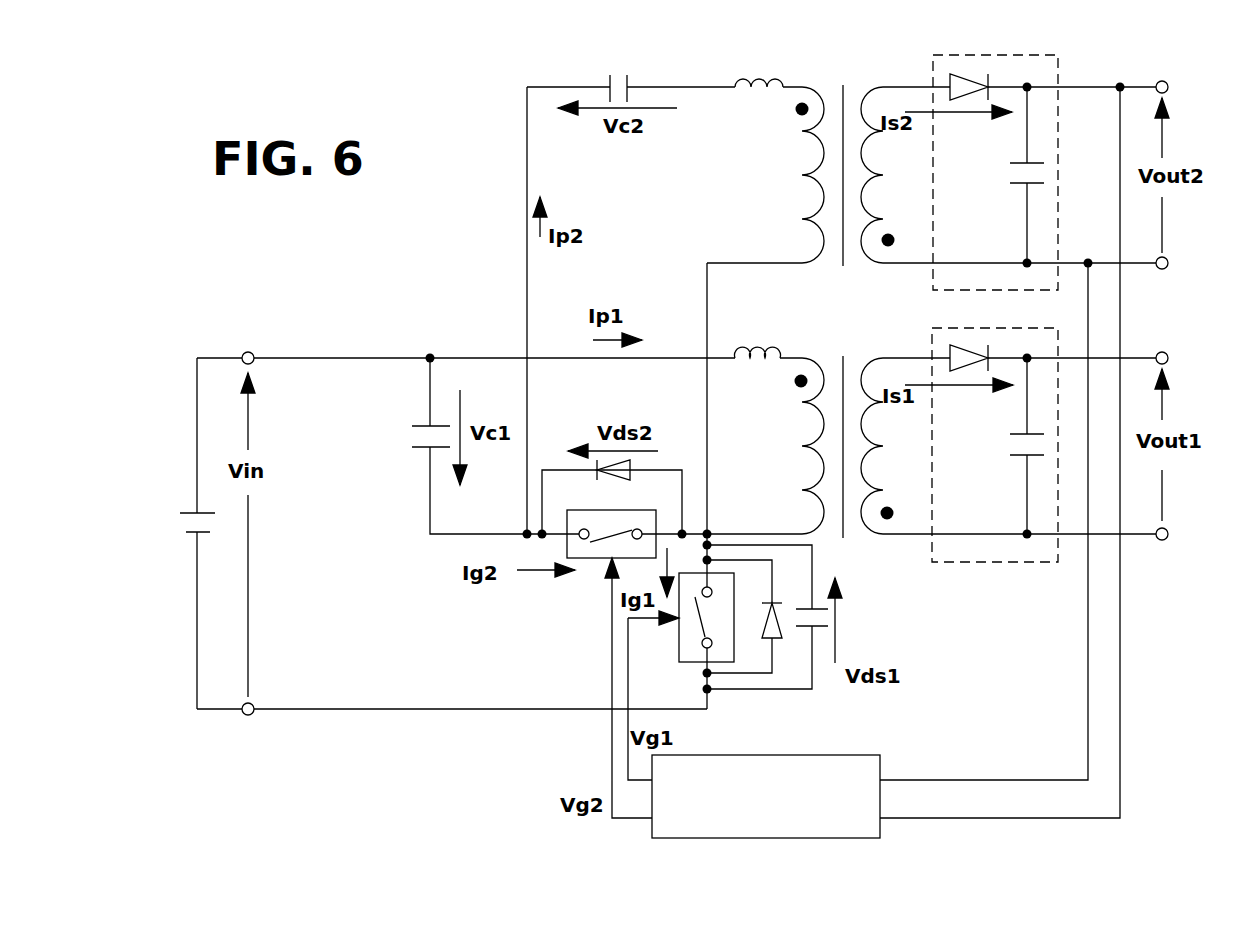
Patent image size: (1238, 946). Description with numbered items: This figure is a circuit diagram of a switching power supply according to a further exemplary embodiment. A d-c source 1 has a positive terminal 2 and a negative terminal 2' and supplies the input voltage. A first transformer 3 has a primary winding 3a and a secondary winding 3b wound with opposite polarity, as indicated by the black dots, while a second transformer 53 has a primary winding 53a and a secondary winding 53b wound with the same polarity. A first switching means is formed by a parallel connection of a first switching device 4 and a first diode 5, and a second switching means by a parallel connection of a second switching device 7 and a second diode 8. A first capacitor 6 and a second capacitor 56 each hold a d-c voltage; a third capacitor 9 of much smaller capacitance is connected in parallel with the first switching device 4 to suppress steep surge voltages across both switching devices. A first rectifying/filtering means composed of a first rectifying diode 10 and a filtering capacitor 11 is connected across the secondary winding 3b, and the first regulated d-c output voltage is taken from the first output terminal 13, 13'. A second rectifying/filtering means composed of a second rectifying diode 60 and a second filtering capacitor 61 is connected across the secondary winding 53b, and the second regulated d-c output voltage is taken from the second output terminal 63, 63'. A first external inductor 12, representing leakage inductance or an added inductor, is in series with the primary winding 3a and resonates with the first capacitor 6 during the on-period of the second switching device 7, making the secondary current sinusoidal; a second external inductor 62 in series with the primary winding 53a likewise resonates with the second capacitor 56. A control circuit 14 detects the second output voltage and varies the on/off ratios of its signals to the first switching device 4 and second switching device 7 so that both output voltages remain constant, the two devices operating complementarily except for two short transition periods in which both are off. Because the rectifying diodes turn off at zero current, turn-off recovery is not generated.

The d-c source 1 is at (182, 516).
The positive terminal 2 is at (255, 335).
The negative terminal 2' is at (258, 738).
The first transformer 3 is at (842, 465).
The primary winding 3a is at (807, 470).
The secondary winding 3b is at (888, 470).
The first switching device 4 is at (679, 640).
The first diode 5 is at (777, 640).
The first capacitor 6 is at (412, 432).
The second switching device 7 is at (590, 560).
The second diode 8 is at (632, 463).
The third capacitor 9 is at (827, 615).
The first rectifying diode 10 is at (985, 364).
The filtering capacitor 11 is at (1010, 442).
The first external inductor 12 is at (775, 346).
The first output terminal 13 is at (1162, 336).
The first output terminal 13' is at (1167, 566).
The control circuit 14 is at (870, 838).
The second transformer 53 is at (812, 148).
The primary winding 53a is at (807, 165).
The secondary winding 53b is at (873, 107).
The second capacitor 56 is at (618, 74).
The second rectifying diode 60 is at (990, 96).
The second filtering capacitor 61 is at (1010, 173).
The second external inductor 62 is at (760, 82).
The second output terminal 63 is at (1149, 66).
The second output terminal 63' is at (1196, 265).